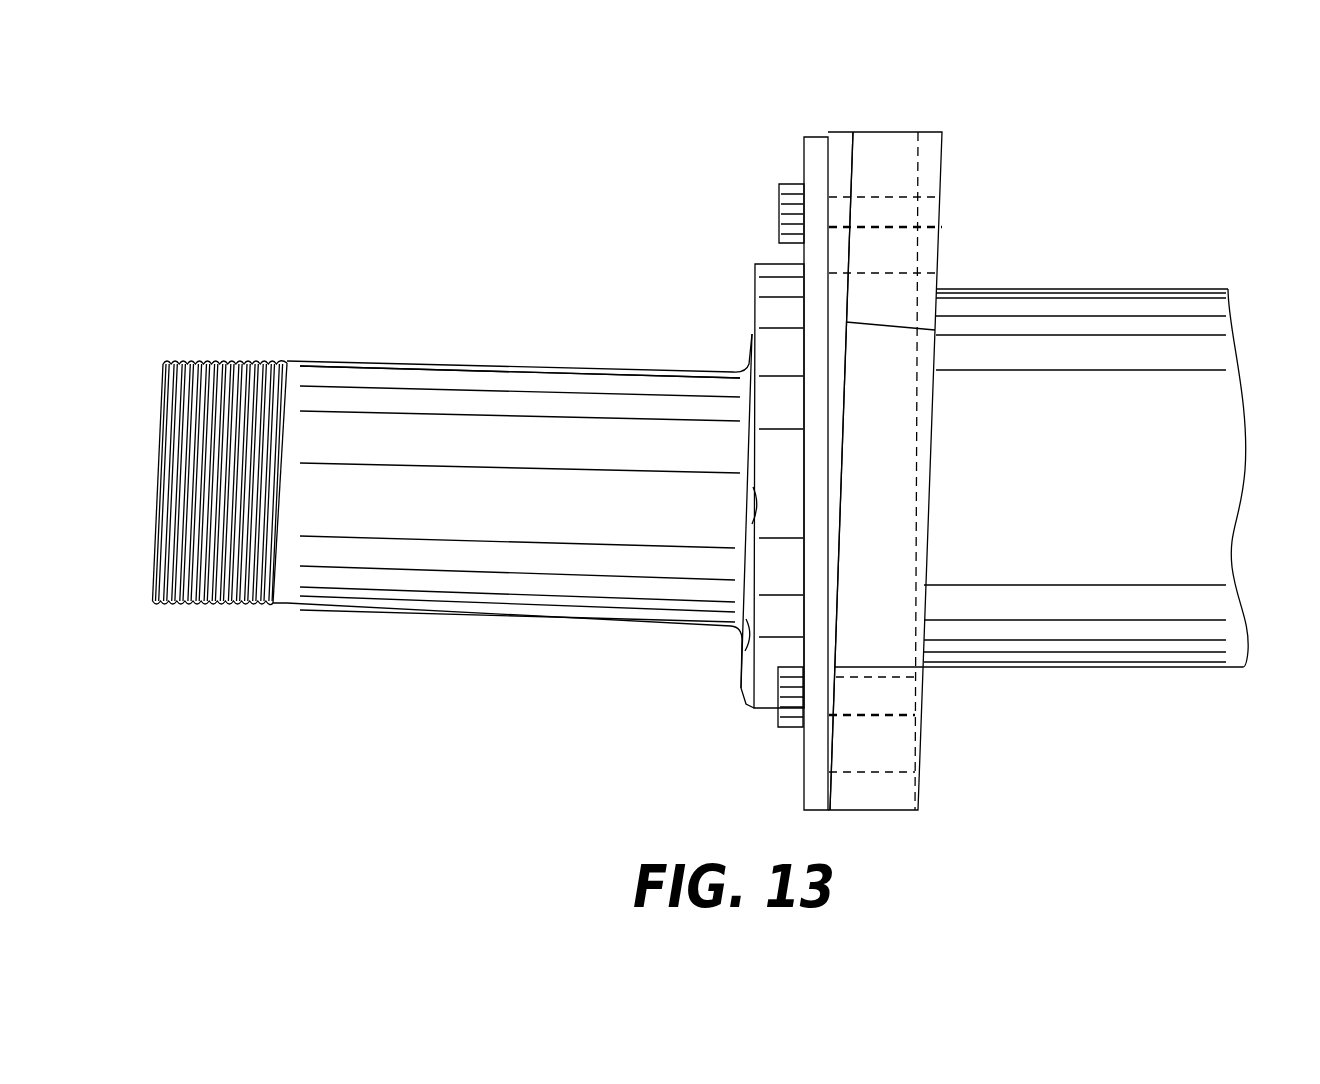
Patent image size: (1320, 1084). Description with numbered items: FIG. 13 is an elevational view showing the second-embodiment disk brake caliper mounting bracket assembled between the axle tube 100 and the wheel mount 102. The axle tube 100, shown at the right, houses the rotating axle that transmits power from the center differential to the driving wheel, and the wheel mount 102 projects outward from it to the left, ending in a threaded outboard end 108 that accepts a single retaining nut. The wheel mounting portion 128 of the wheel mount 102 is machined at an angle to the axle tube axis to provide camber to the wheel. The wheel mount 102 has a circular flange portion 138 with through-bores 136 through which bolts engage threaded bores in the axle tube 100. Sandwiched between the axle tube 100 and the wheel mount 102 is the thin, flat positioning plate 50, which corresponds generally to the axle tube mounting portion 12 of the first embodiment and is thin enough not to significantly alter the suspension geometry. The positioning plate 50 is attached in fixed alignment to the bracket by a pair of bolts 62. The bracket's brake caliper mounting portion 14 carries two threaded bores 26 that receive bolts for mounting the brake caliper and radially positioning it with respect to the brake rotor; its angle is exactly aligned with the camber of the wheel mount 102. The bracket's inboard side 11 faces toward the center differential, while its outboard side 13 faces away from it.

The inboard side 11 is at (923, 607).
The axle tube mounting portion 12 is at (843, 143).
The outboard side 13 is at (827, 252).
The brake caliper mounting portion 14 is at (925, 188).
The threaded bores 26 is at (890, 270).
The positioning plate 50 is at (806, 760).
The bolts 62 is at (778, 207).
The axle tube 100 is at (1108, 310).
The wheel mount 102 is at (428, 362).
The outboard end 108 is at (208, 358).
The wheel mounting portion 128 is at (537, 390).
The through-bores 136 is at (748, 639).
The circular flange portion 138 is at (772, 272).